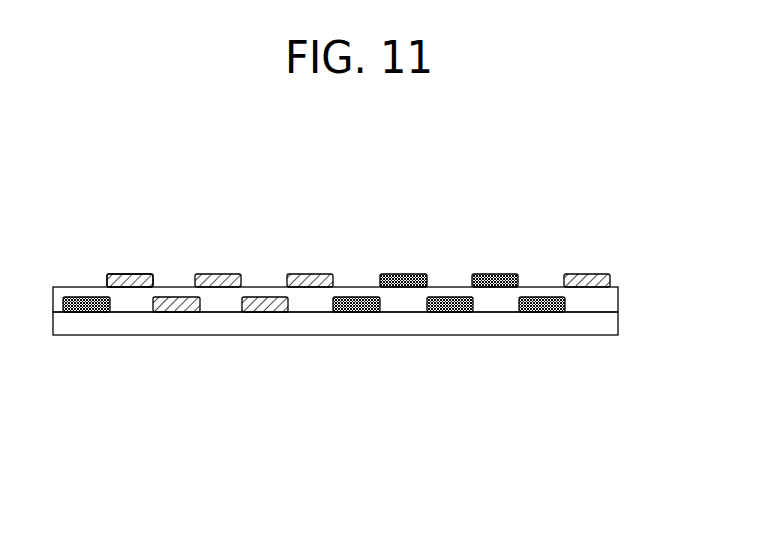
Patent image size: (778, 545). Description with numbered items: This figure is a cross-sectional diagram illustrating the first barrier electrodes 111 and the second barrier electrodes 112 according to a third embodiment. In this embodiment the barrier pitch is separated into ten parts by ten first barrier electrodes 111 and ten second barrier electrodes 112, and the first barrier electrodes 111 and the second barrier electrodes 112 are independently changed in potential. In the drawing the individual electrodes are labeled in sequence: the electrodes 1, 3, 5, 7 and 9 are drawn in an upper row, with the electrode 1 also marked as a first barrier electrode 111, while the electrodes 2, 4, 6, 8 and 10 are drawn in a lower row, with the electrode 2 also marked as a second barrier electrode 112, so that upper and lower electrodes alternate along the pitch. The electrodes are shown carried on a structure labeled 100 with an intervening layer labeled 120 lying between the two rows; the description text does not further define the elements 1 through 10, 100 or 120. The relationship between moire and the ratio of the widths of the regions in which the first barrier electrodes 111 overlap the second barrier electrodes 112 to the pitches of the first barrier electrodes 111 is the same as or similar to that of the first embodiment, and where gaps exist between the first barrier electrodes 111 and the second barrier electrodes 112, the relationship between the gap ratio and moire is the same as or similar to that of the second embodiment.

The first electrode pad 1 is at (138, 273).
The second electrode pad 2 is at (168, 313).
The third electrode pad 3 is at (218, 273).
The fourth electrode pad 4 is at (260, 313).
The fifth electrode pad 5 is at (317, 273).
The sixth electrode pad 6 is at (352, 313).
The seventh electrode pad 7 is at (406, 273).
The eighth electrode pad 8 is at (442, 313).
The ninth electrode pad 9 is at (495, 273).
The tenth electrode pad 10 is at (535, 313).
The substrate 100 is at (595, 323).
The first barrier electrodes 111 is at (118, 275).
The second barrier electrodes 112 is at (80, 313).
The insulating layer 120 is at (600, 300).